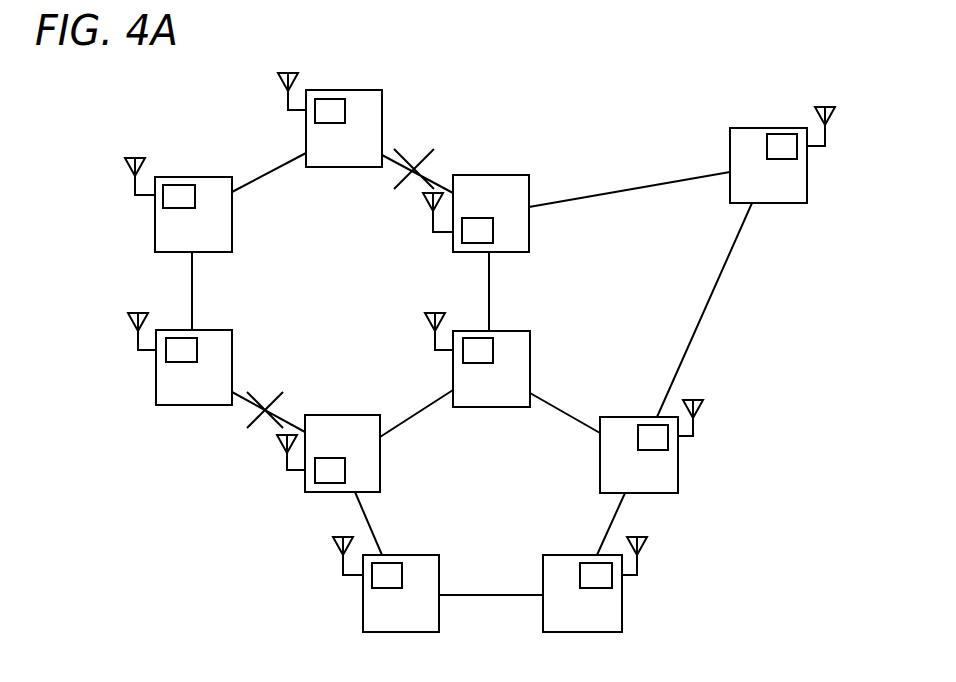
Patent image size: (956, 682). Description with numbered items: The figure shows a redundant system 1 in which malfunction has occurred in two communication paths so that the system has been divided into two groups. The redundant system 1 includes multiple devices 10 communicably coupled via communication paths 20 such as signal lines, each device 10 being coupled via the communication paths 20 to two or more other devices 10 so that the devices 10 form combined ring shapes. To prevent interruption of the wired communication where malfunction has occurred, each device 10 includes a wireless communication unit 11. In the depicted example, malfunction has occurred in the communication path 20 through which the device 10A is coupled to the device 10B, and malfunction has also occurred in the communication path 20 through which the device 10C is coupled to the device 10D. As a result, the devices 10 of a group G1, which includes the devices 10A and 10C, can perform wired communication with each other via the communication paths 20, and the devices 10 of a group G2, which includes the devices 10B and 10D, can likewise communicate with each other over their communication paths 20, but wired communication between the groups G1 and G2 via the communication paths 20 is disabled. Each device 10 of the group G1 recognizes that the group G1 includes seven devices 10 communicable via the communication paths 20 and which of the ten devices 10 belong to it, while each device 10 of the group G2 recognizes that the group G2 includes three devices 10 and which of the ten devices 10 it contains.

The redundant system 1 is at (493, 135).
The device 10 is at (573, 633).
The device 10A is at (518, 174).
The device 10B is at (367, 90).
The device 10C is at (358, 414).
The device 10D is at (224, 328).
The wireless communication unit 11 is at (329, 97).
The communication path 20 is at (273, 165).
The group G1 is at (720, 310).
The group G2 is at (187, 122).